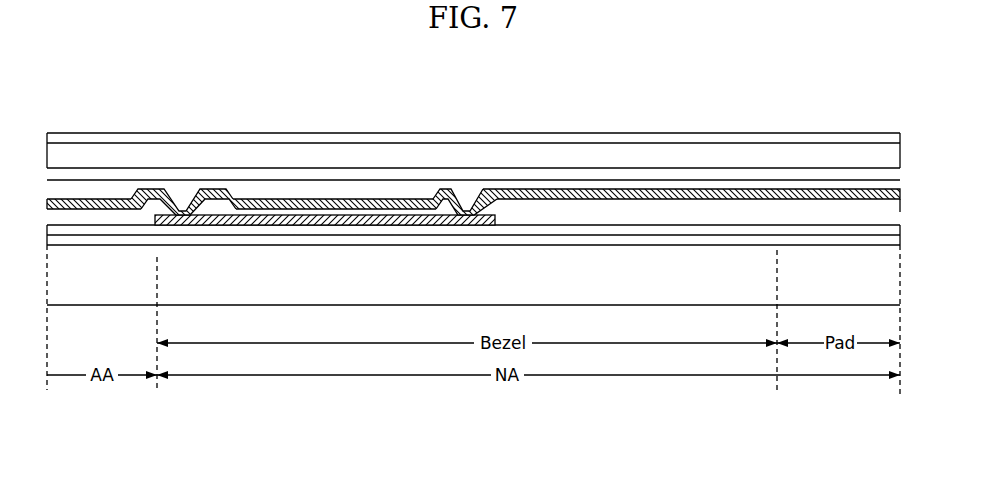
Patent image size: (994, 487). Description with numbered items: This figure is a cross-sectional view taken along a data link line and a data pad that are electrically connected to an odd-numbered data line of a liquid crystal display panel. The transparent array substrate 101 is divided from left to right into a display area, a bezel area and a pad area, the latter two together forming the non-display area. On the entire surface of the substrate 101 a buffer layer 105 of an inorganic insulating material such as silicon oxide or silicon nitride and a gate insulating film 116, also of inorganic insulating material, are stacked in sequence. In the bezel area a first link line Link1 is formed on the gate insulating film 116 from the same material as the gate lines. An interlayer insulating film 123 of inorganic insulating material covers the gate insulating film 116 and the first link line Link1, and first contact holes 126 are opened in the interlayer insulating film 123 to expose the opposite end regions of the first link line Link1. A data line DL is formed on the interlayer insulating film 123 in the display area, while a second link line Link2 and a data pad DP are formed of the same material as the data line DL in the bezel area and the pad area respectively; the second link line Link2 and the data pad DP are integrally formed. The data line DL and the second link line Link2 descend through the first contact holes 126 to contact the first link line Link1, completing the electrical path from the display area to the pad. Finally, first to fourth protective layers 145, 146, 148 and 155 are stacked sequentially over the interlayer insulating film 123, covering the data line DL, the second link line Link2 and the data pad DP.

The substrate 101 is at (886, 292).
The buffer layer 105 is at (535, 240).
The gate insulating film 116 is at (577, 230).
The interlayer insulating film 123 is at (617, 208).
The first contact holes 126 is at (183, 190).
The first protective layer 145 is at (325, 192).
The second protective layer 146 is at (246, 172).
The third protective layer 148 is at (378, 155).
The fourth protective layer 155 is at (585, 137).
The data line DL is at (84, 199).
The data pad DP is at (842, 192).
The first link line Link1 is at (302, 225).
The second link line Link2 is at (679, 200).